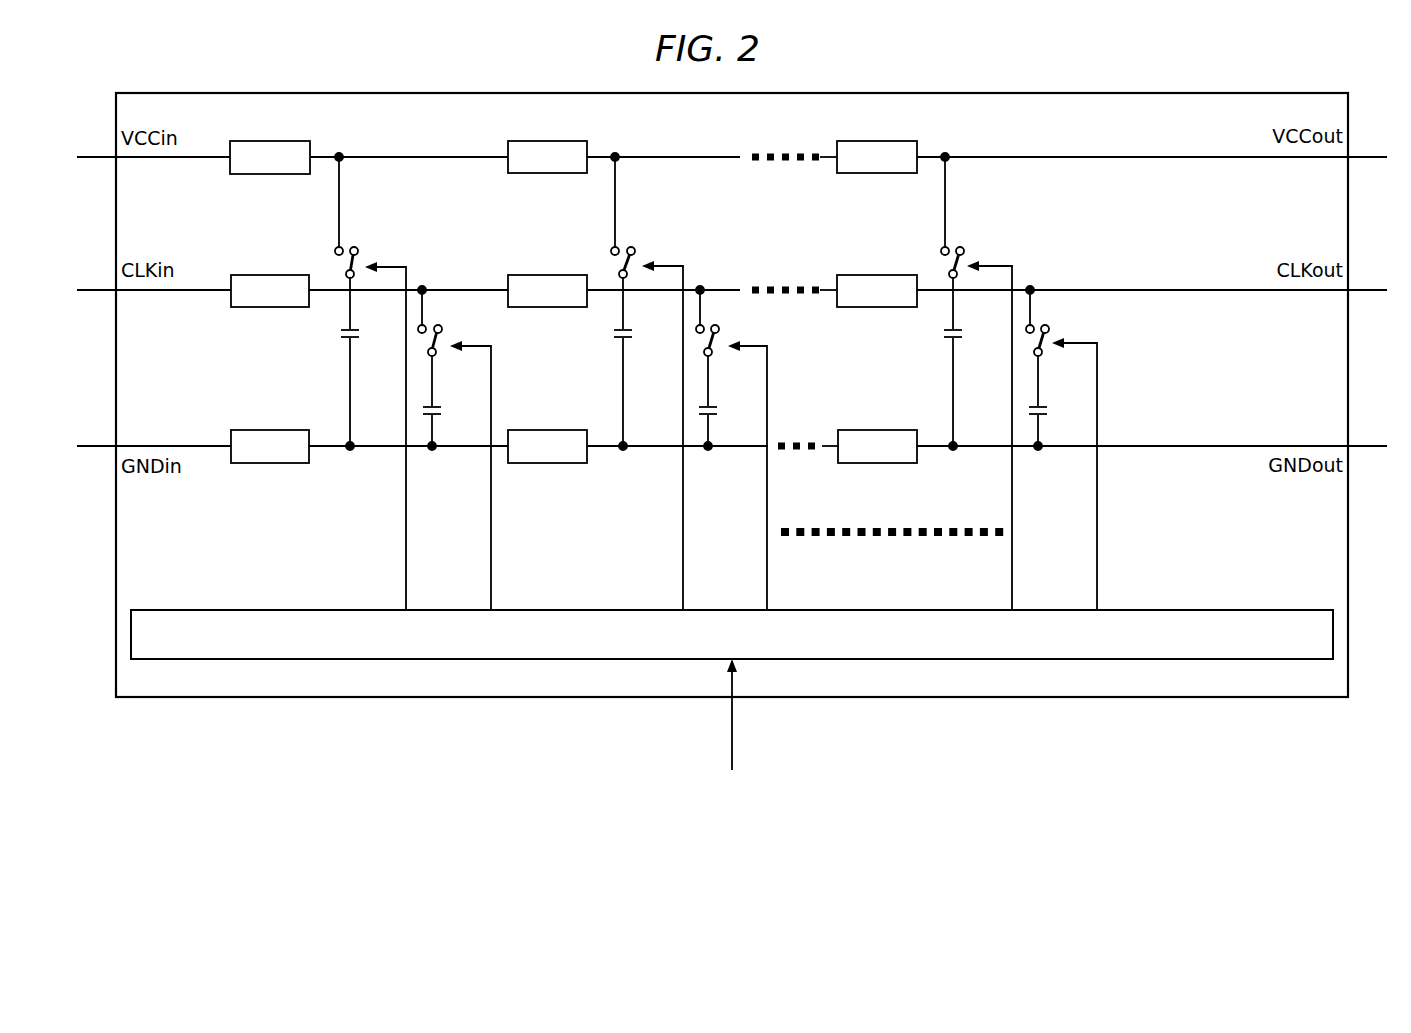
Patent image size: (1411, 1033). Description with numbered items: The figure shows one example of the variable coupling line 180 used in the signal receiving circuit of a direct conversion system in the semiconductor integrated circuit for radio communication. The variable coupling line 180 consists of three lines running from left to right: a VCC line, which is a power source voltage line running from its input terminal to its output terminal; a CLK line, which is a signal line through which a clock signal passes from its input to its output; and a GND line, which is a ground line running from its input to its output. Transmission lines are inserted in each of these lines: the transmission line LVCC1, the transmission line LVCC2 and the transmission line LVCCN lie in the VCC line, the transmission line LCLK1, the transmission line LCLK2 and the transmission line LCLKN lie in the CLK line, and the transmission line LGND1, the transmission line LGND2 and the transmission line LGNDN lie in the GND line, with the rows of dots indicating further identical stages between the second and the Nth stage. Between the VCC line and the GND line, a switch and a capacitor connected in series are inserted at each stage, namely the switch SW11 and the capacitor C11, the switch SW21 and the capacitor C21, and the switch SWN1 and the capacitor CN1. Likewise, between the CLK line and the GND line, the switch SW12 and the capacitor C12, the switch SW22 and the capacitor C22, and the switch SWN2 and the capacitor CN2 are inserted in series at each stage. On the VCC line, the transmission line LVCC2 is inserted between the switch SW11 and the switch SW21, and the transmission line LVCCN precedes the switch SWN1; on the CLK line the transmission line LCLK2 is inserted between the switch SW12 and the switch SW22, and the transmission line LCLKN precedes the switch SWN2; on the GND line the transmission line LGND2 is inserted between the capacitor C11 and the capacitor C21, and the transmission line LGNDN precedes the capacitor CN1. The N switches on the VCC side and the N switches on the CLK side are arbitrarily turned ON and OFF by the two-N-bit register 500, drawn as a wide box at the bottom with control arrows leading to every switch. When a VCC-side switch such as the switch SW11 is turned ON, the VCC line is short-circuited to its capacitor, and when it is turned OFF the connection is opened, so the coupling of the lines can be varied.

The 2N-bit register 500 is at (1072, 659).
The variable coupling line 180 is at (1153, 697).
The transmission line LVCC1 is at (270, 157).
The transmission line LCLK1 is at (270, 291).
The transmission line LGND1 is at (270, 446).
The transmission line LVCC2 is at (547, 157).
The transmission line LCLK2 is at (547, 291).
The transmission line LGND2 is at (547, 446).
The transmission line LVCCN is at (877, 157).
The transmission line LCLKN is at (877, 291).
The transmission line LGNDN is at (877, 446).
The switch SW11 is at (377, 381).
The capacitor C11 is at (371, 364).
The switch SW12 is at (461, 448).
The capacitor C12 is at (453, 403).
The switch SW21 is at (654, 381).
The capacitor C21 is at (645, 364).
The switch SW22 is at (739, 448).
The capacitor C22 is at (729, 403).
The switch SWN1 is at (983, 381).
The capacitor CN1 is at (977, 364).
The switch SWN2 is at (1066, 448).
The capacitor CN2 is at (1062, 403).